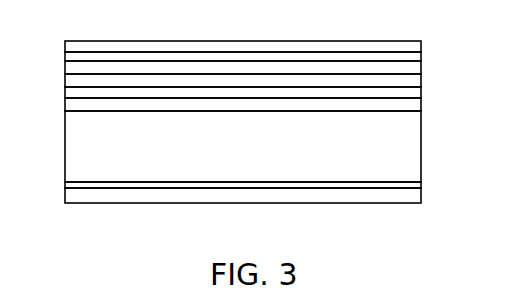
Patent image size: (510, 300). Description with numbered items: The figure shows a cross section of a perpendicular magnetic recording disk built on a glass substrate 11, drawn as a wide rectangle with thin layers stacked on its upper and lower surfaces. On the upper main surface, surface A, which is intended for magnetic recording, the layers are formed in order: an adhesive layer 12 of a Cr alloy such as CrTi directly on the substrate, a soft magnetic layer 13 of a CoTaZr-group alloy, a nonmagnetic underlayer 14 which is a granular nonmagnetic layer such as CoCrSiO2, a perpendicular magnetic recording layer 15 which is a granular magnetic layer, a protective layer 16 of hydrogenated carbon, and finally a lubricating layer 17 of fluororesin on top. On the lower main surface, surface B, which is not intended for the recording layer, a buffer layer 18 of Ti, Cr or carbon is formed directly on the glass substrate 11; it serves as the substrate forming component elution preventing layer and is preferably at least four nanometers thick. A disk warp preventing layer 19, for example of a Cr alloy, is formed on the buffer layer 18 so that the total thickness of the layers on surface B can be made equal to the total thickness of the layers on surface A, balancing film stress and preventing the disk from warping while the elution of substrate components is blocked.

The glass substrate 11 is at (423, 157).
The adhesive layer 12 is at (423, 108).
The soft magnetic layer 13 is at (423, 97).
The nonmagnetic underlayer 14 is at (423, 82).
The perpendicular magnetic recording layer 15 is at (72, 67).
The protective layer 16 is at (72, 57).
The lubricating layer 17 is at (72, 44).
The buffer layer 18 is at (423, 185).
The disk warp preventing layer 19 is at (423, 198).